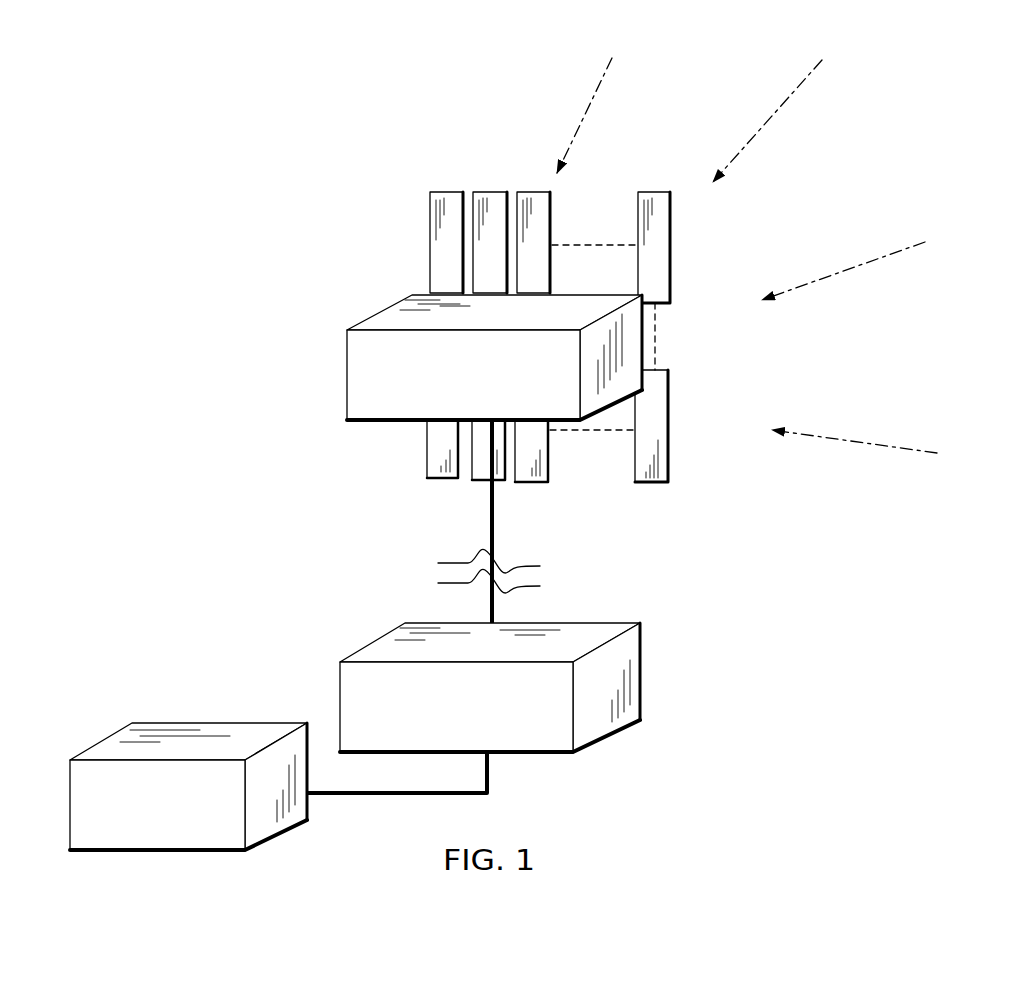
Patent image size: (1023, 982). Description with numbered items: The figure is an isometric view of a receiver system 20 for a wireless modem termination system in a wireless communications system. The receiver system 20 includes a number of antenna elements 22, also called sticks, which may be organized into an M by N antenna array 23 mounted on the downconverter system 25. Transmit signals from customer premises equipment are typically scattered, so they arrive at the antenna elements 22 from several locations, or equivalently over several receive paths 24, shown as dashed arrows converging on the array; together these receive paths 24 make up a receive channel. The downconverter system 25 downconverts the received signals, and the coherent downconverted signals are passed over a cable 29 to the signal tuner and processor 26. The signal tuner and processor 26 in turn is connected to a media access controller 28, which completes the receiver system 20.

The receiver system 20 is at (332, 245).
The antenna element 22 is at (668, 445).
The antenna array 23 is at (677, 217).
The receive path 24 is at (767, 252).
The downconverter system 25 is at (360, 323).
The signal tuner and processor 26 is at (355, 648).
The media access controller 28 is at (167, 722).
The cable 29 is at (495, 497).